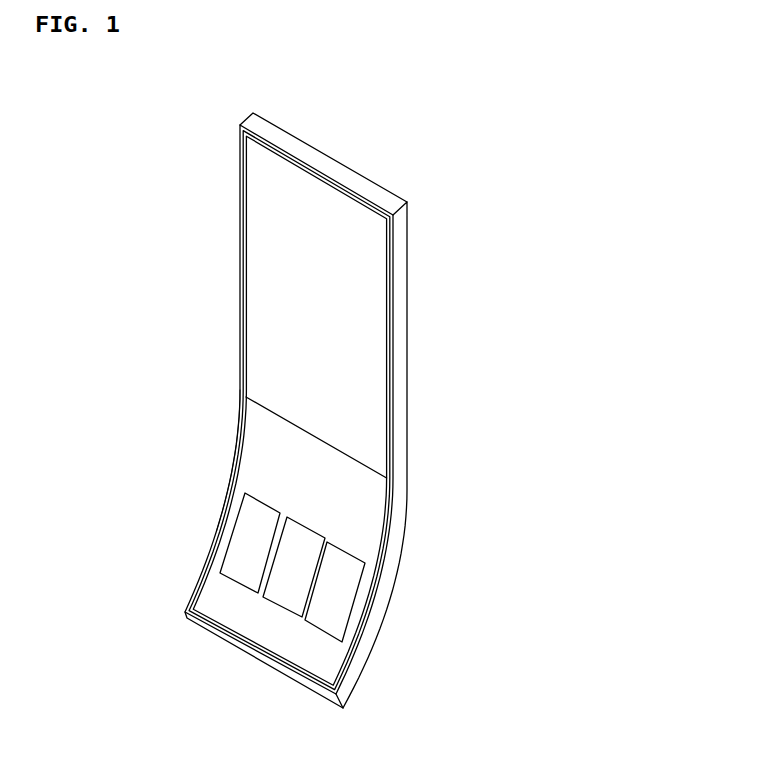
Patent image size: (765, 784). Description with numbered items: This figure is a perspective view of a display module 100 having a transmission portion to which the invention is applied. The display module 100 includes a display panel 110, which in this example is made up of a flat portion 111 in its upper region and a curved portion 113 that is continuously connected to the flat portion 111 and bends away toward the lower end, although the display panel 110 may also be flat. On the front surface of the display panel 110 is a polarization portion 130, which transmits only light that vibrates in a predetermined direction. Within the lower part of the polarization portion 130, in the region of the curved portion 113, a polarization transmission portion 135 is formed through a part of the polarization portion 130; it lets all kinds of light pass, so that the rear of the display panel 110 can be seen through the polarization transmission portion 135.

The display module 100 is at (378, 128).
The display panel 110 is at (115, 353).
The flat portion 111 is at (240, 353).
The curved portion 113 is at (228, 507).
The polarization portion 130 is at (270, 225).
The polarization transmission portion 135 is at (225, 572).